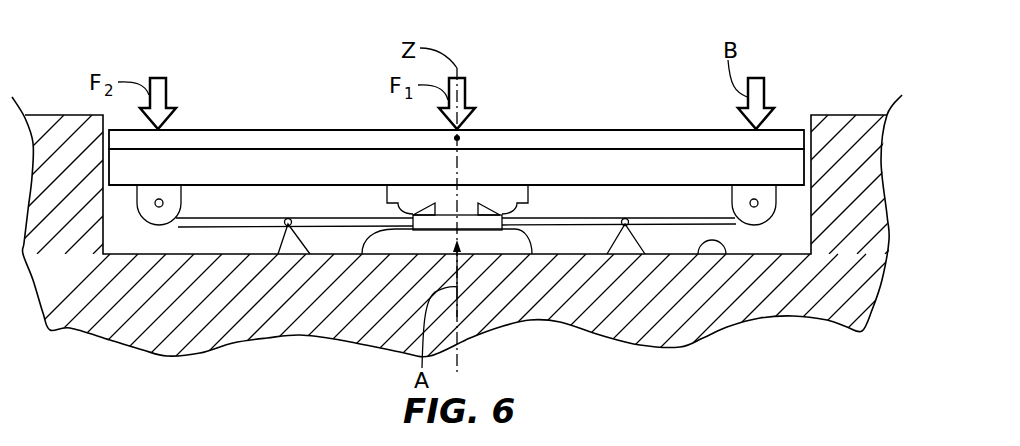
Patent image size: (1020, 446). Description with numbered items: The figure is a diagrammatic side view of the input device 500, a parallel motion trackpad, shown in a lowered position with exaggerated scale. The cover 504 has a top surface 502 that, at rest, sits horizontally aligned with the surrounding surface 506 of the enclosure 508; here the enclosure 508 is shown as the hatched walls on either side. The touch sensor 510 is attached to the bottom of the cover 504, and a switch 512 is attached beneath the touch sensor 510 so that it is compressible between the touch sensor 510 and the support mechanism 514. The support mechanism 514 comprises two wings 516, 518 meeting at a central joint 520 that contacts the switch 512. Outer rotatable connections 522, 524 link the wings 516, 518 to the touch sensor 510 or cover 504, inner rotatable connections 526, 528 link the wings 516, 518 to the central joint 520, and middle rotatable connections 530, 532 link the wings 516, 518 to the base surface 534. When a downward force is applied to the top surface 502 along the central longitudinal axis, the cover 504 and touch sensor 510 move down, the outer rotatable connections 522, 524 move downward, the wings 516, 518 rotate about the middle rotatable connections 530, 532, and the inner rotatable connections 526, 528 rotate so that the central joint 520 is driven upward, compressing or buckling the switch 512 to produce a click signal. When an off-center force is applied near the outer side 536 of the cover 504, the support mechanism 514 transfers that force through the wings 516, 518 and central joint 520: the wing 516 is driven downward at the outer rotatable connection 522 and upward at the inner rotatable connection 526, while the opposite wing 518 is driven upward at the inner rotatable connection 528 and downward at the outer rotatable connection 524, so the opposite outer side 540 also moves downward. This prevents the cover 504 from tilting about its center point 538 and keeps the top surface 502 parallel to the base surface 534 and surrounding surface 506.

The input device 500 is at (799, 27).
The top surface 502 is at (562, 131).
The cover 504 is at (608, 141).
The surrounding surface 506 is at (52, 115).
The enclosure 508 is at (866, 113).
The touch sensor 510 is at (630, 163).
The switch 512 is at (410, 200).
The support mechanism 514 is at (782, 214).
The wing 516 is at (220, 222).
The wing 518 is at (693, 225).
The central joint 520 is at (488, 220).
The outer rotatable connection 522 is at (163, 203).
The outer rotatable connection 524 is at (757, 207).
The inner rotatable connection 526 is at (362, 254).
The inner rotatable connection 528 is at (532, 254).
The middle rotatable connection 530 is at (287, 245).
The middle rotatable connection 532 is at (623, 245).
The base surface 534 is at (708, 248).
The outer side 536 is at (183, 128).
The center point 538 is at (460, 138).
The opposite outer side 540 is at (782, 129).